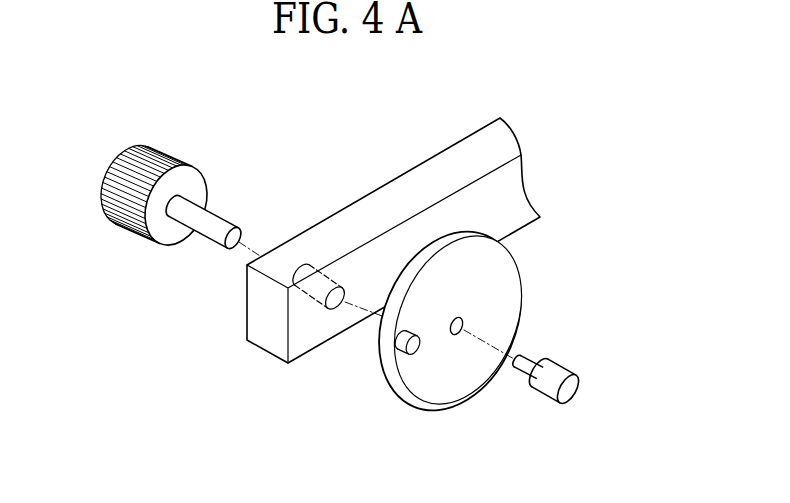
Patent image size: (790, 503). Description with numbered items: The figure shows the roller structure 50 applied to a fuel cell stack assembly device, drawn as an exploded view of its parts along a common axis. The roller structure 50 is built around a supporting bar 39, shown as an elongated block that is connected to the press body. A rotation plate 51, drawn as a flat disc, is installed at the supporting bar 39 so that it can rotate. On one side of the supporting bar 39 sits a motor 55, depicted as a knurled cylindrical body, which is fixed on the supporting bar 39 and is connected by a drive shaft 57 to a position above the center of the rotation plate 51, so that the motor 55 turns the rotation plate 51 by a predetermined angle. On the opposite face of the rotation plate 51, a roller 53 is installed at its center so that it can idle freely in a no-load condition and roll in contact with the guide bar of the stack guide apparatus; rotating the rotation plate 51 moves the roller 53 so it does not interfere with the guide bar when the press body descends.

The roller structure 50 is at (343, 87).
The supporting bar 39 is at (273, 345).
The rotation plate 51 is at (512, 287).
The roller 53 is at (580, 382).
The motor 55 is at (135, 225).
The drive shaft 57 is at (210, 240).